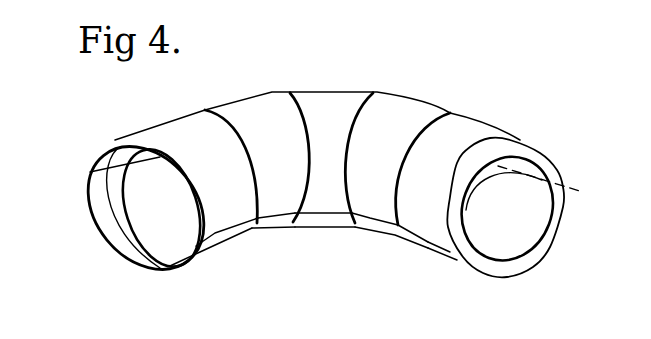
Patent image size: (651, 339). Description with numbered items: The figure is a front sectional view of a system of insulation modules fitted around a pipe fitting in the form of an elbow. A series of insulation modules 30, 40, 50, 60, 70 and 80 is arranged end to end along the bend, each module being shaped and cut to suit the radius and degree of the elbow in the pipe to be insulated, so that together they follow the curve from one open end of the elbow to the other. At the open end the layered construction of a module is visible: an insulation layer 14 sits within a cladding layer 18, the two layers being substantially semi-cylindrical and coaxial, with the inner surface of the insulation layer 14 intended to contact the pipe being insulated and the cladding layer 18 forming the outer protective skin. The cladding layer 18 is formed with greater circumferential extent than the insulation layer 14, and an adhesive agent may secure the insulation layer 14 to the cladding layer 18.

The insulation layer 14 is at (157, 258).
The cladding layer 18 is at (103, 238).
The insulation module 30 is at (157, 133).
The insulation module 40 is at (270, 212).
The insulation module 50 is at (333, 102).
The insulation module 60 is at (375, 212).
The insulation module 70 is at (455, 130).
The insulation module 80 is at (503, 147).